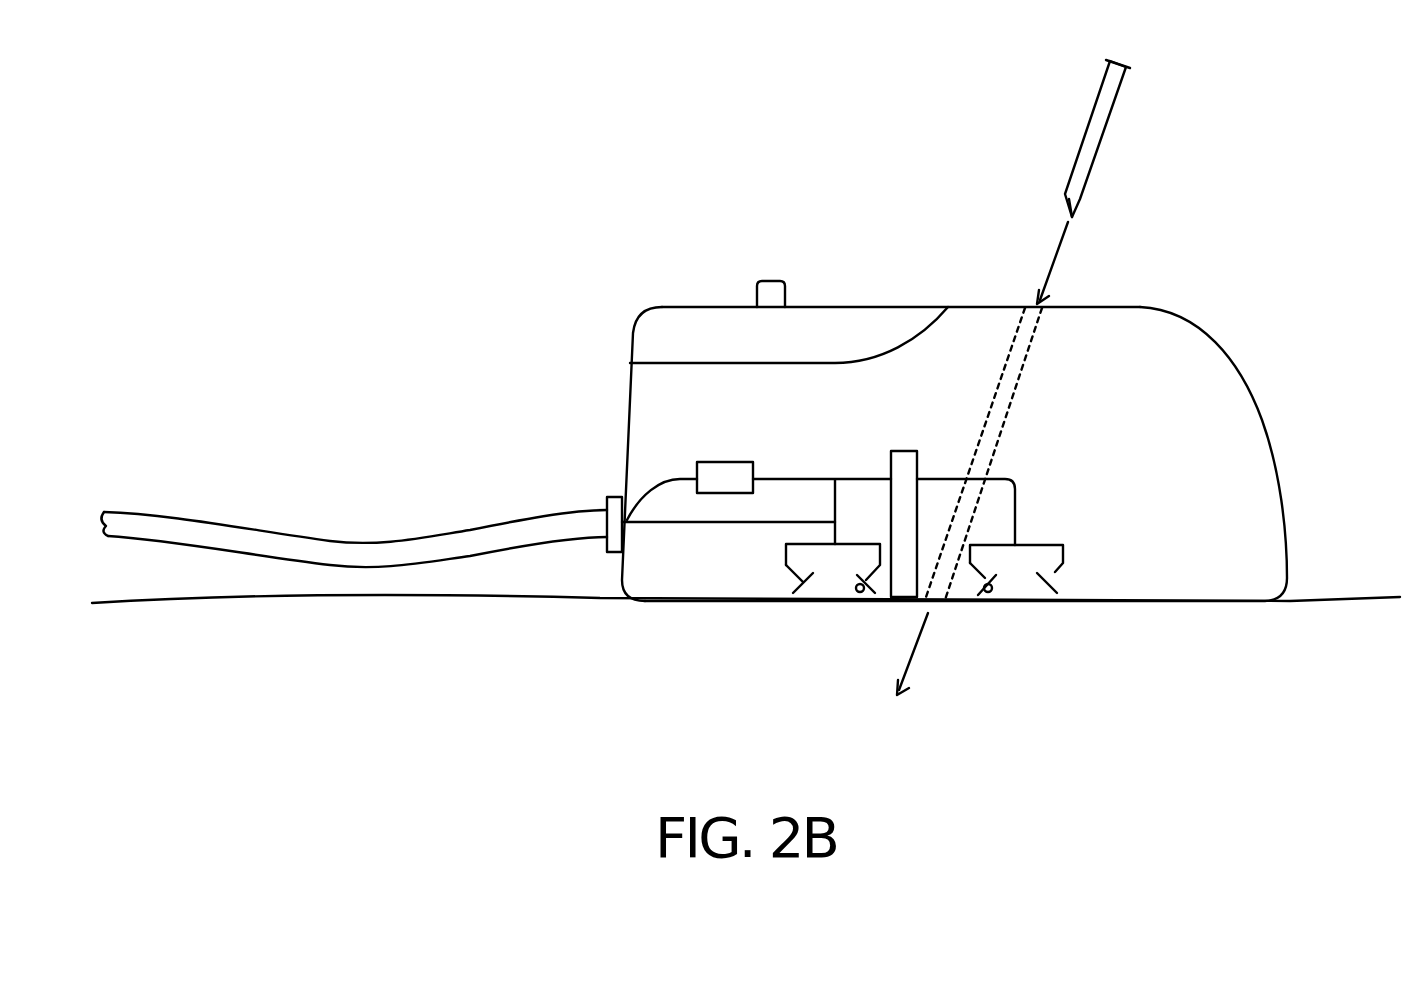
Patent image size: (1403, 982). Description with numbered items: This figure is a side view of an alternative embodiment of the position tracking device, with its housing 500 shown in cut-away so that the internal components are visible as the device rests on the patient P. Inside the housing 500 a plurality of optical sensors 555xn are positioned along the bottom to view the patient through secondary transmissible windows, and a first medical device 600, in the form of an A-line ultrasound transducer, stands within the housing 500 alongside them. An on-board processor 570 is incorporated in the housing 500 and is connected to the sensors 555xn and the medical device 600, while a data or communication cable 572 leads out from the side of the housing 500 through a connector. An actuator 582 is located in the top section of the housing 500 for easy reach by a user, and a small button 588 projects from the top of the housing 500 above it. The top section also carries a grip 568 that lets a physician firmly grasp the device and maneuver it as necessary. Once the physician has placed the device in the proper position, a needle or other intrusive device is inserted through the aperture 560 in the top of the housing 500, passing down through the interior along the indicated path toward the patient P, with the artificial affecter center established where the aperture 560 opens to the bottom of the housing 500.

The housing 500 is at (1262, 420).
The aperture 560 is at (1040, 307).
The actuator 582 is at (782, 348).
The button 588 is at (763, 282).
The medical device 600 is at (903, 450).
The on-board processor 570 is at (818, 486).
The optical sensors 555xn is at (1080, 573).
The data or communication cable 572 is at (347, 553).
The grip 568 is at (1230, 512).
The paper P is at (1153, 702).